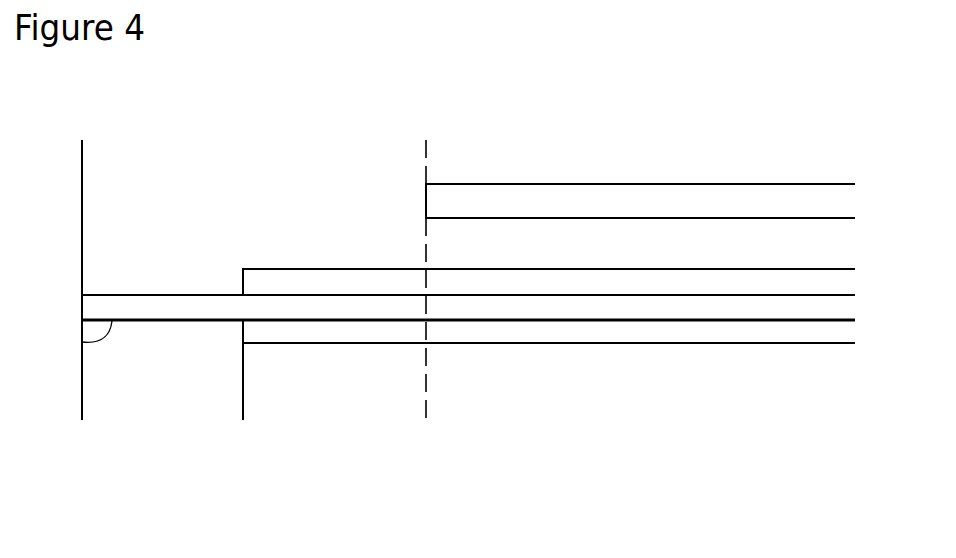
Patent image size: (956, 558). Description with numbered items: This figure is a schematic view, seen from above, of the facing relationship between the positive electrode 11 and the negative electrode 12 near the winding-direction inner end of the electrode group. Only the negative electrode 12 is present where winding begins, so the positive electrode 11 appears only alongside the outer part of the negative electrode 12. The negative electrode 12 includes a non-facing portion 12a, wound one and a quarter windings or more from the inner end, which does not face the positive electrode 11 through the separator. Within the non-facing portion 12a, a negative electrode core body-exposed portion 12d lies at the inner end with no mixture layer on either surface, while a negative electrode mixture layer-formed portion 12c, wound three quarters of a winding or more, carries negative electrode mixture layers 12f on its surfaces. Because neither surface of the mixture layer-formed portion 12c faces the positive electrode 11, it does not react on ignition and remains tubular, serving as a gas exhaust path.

The positive electrode 11 is at (633, 184).
The negative electrode 12 is at (723, 268).
The non-facing portion 12a is at (155, 293).
The negative electrode mixture layer-formed portion 12c is at (337, 268).
The negative electrode mixture layers 12f is at (557, 268).
The negative electrode core body-exposed portion 12d is at (82, 343).